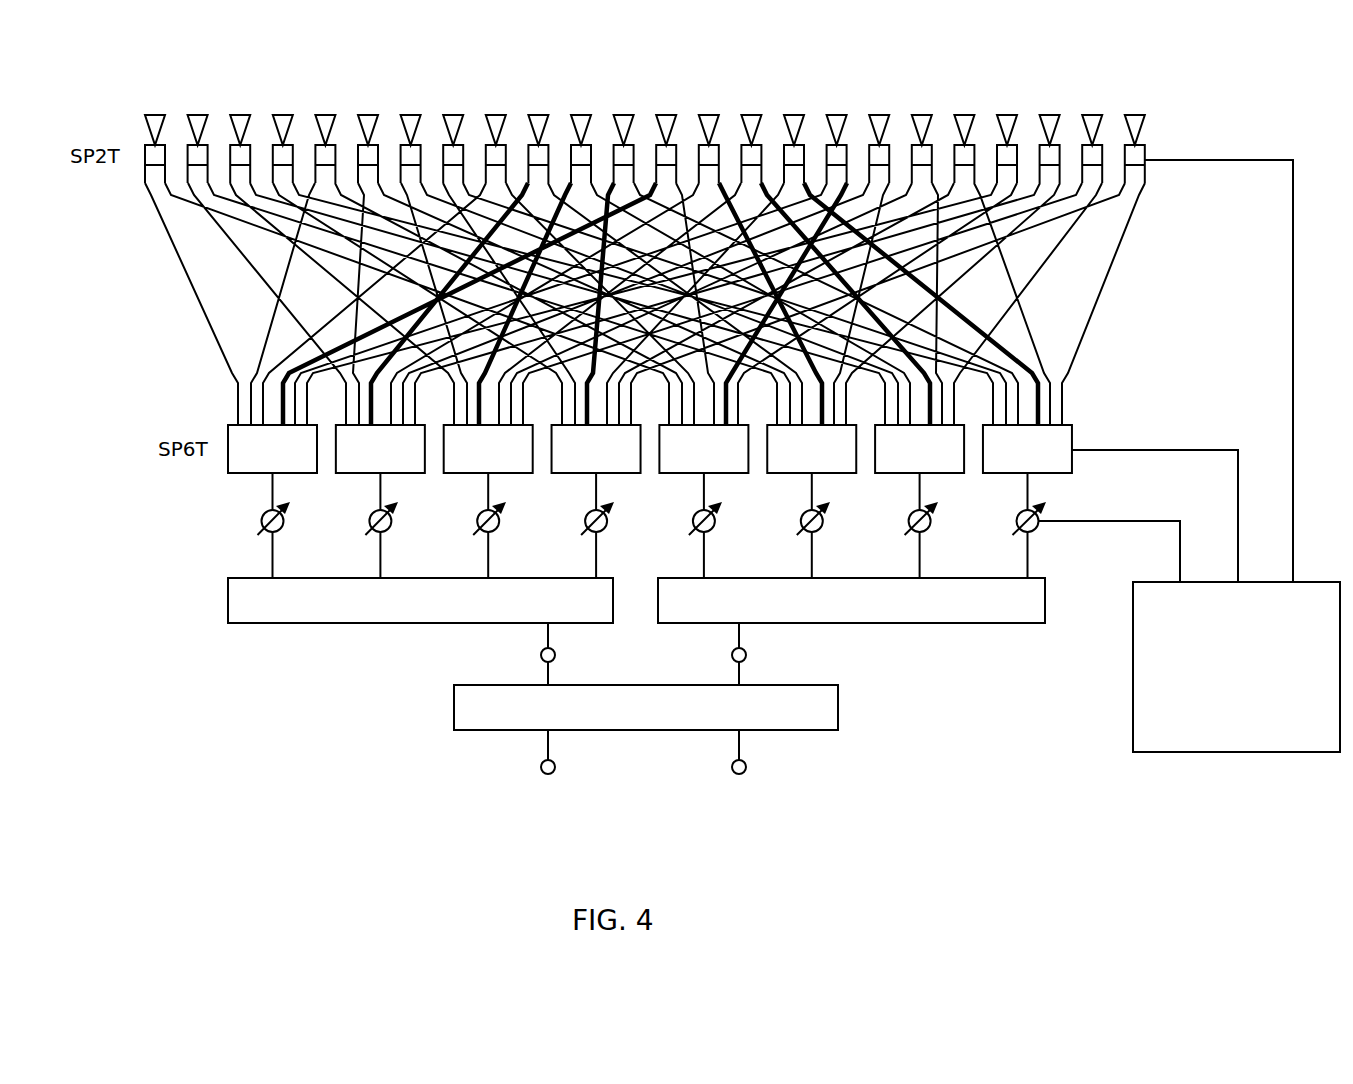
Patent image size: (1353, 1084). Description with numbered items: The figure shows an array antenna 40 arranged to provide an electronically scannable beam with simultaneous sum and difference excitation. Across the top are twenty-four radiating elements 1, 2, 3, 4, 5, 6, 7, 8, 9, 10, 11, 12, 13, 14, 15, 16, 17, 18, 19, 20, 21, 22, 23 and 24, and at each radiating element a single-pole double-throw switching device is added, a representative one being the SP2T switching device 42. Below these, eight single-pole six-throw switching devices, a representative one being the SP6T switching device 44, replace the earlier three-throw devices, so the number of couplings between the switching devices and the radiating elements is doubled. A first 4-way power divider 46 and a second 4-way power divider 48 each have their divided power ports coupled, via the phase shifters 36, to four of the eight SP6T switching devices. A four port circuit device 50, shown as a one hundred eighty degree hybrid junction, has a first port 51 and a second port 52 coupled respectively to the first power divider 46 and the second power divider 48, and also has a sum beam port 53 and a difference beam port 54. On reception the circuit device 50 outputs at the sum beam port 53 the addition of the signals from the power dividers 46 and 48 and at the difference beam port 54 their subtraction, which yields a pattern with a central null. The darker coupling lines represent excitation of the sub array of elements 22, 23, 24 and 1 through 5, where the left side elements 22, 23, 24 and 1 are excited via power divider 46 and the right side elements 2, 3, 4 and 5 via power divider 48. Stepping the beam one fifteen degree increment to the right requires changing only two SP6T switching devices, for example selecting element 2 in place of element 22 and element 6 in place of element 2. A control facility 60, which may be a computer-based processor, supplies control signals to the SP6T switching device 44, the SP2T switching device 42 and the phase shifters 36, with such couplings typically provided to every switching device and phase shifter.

The radiating element 1 is at (666, 117).
The radiating element 2 is at (709, 117).
The radiating element 3 is at (751, 117).
The radiating element 4 is at (794, 117).
The radiating element 5 is at (837, 117).
The radiating element 6 is at (879, 117).
The radiating element 7 is at (922, 117).
The radiating element 8 is at (964, 117).
The radiating element 9 is at (1007, 117).
The radiating element 10 is at (1050, 117).
The radiating element 11 is at (1092, 117).
The radiating element 12 is at (1135, 117).
The radiating element 13 is at (155, 117).
The radiating element 14 is at (198, 117).
The radiating element 15 is at (240, 117).
The radiating element 16 is at (283, 117).
The radiating element 17 is at (325, 117).
The radiating element 18 is at (368, 117).
The radiating element 19 is at (411, 117).
The radiating element 20 is at (453, 117).
The radiating element 21 is at (496, 117).
The radiating element 22 is at (538, 117).
The radiating element 23 is at (581, 117).
The radiating element 24 is at (624, 117).
The phase shifter 36 is at (262, 515).
The array antenna 40 is at (148, 337).
The single-pole double-throw (SP2T) switching device 42 is at (1147, 148).
The single-pole six-throw (SP6T) switching device 44 is at (1072, 426).
The first 4-way power divider 46 is at (260, 623).
The second 4-way power divider 48 is at (918, 623).
The four port circuit device 50 is at (840, 712).
The first port 51 is at (541, 654).
The second port 52 is at (747, 653).
The sum beam port 53 is at (541, 765).
The difference beam port 54 is at (747, 765).
The control facility 60 is at (1218, 752).